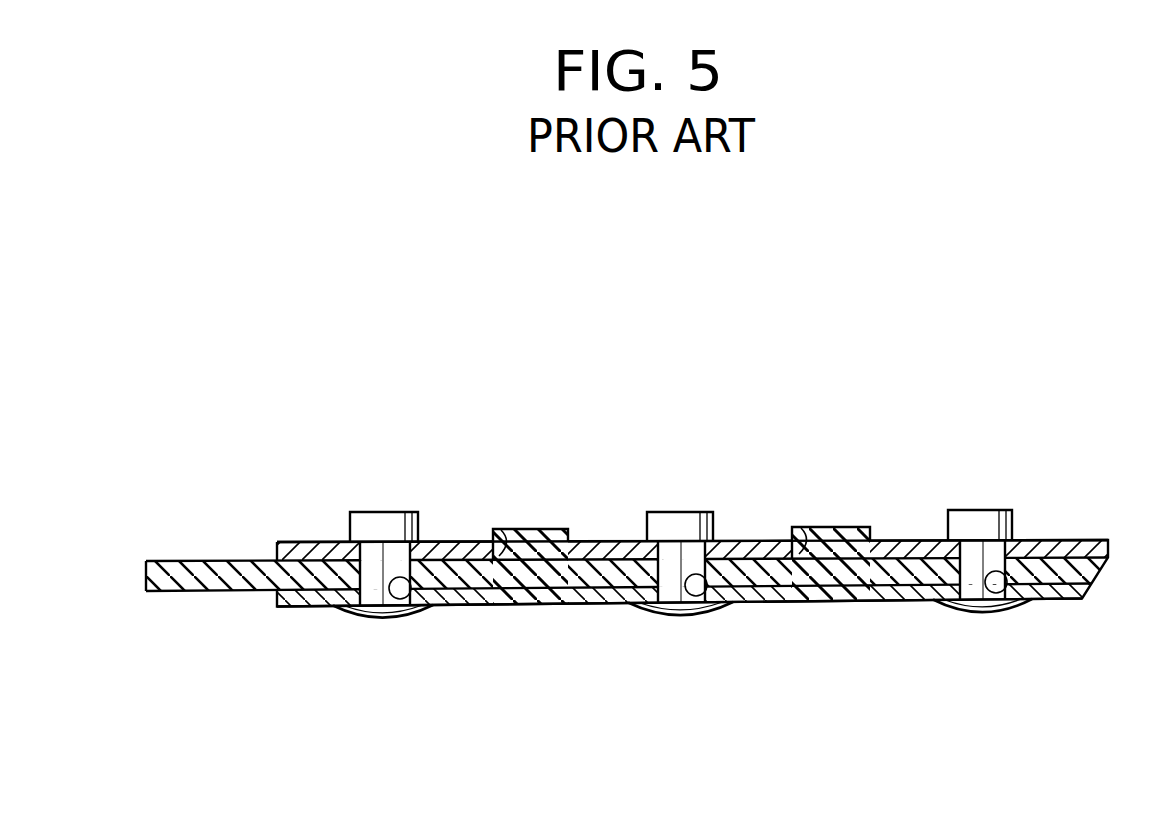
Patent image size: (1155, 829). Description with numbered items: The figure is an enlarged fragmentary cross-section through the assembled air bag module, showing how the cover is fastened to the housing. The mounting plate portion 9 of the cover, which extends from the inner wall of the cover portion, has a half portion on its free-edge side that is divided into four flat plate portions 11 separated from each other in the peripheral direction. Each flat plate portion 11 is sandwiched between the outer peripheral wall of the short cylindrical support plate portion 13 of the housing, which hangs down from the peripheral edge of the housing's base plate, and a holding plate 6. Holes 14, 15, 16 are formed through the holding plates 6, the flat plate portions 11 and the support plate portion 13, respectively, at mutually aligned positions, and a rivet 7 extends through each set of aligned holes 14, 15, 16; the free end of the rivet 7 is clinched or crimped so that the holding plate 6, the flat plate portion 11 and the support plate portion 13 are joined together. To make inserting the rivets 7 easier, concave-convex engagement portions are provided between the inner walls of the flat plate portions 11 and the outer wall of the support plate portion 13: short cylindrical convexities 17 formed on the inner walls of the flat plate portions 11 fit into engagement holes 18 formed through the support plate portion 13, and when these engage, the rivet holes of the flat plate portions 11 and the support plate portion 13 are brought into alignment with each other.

The holding plate 6 is at (548, 604).
The rivet 7 is at (387, 622).
The mounting plate portion 9 is at (202, 562).
The flat plate portion 11 is at (190, 593).
The support plate portion 13 is at (318, 542).
The hole 14 is at (405, 619).
The hole 15 is at (373, 538).
The hole 16 is at (370, 617).
The short cylindrical convexity 17 is at (540, 529).
The engagement hole 18 is at (510, 540).